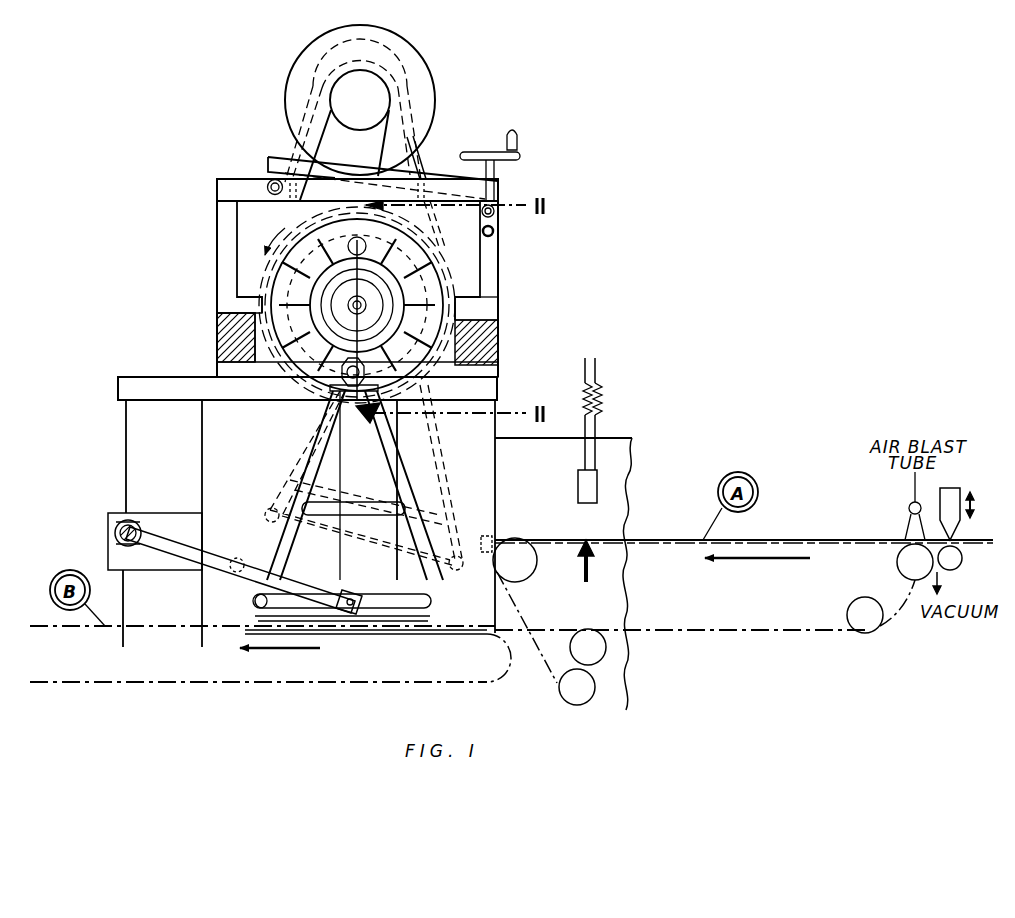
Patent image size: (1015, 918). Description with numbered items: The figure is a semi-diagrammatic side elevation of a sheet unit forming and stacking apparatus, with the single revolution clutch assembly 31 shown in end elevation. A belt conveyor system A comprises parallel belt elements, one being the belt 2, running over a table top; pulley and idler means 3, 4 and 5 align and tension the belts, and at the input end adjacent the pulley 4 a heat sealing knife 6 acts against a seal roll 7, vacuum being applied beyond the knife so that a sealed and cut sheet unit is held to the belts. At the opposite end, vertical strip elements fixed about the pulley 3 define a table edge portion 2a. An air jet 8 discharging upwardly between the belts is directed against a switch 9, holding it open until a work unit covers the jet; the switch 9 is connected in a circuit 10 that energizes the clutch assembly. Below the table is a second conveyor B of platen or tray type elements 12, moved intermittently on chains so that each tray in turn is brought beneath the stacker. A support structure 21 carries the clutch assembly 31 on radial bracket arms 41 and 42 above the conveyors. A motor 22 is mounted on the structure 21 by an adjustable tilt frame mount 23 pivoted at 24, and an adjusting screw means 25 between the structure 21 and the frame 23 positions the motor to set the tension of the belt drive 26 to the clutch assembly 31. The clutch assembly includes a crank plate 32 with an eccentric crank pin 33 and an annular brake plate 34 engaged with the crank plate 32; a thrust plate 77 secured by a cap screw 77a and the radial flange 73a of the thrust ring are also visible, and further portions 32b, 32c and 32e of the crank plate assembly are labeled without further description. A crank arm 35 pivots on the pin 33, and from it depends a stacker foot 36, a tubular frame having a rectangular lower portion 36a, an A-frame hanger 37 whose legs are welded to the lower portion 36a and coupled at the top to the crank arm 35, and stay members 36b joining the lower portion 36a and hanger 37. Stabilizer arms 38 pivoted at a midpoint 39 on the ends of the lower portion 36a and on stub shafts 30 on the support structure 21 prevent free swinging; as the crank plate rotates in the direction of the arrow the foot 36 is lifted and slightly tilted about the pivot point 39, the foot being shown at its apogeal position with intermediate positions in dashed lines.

The belt element 2 is at (800, 540).
The table edge portion 2a is at (494, 540).
The pulley 3 is at (528, 568).
The pulley 4 is at (875, 620).
The idler means 5 is at (597, 688).
The heat sealing knife 6 is at (960, 495).
The seal roll 7 is at (963, 560).
The air jet 8 is at (590, 574).
The switch 9 is at (598, 488).
The circuit 10 is at (598, 380).
The tray element 12 is at (425, 633).
The support structure 21 is at (135, 446).
The motor 22 is at (425, 72).
The adjustable tilt frame mount 23 is at (278, 160).
The pivot 24 is at (268, 184).
The adjusting screw means 25 is at (487, 150).
The belt drive 26 is at (432, 165).
The stub shaft 30 is at (118, 531).
The single revolution clutch assembly 31 is at (458, 282).
The crank plate 32 is at (252, 346).
The ring 32b is at (300, 283).
The bearing 32c is at (272, 316).
The frame member 32e is at (445, 203).
The crank pin 33 is at (499, 385).
The annular brake plate 34 is at (500, 340).
The crank arm 35 is at (340, 378).
The stacker foot 36 is at (272, 533).
The rectangular lower portion 36a is at (253, 600).
The stay member 36b is at (445, 580).
The A-frame hanger 37 is at (410, 470).
The stabilizer arm 38 is at (195, 545).
The midpoint 39 is at (352, 608).
The radial bracket arm 41 is at (262, 305).
The radial bracket arm 42 is at (465, 310).
The radial flange 73a is at (372, 300).
The thrust plate 77 is at (370, 290).
The cap screw 77a is at (352, 310).